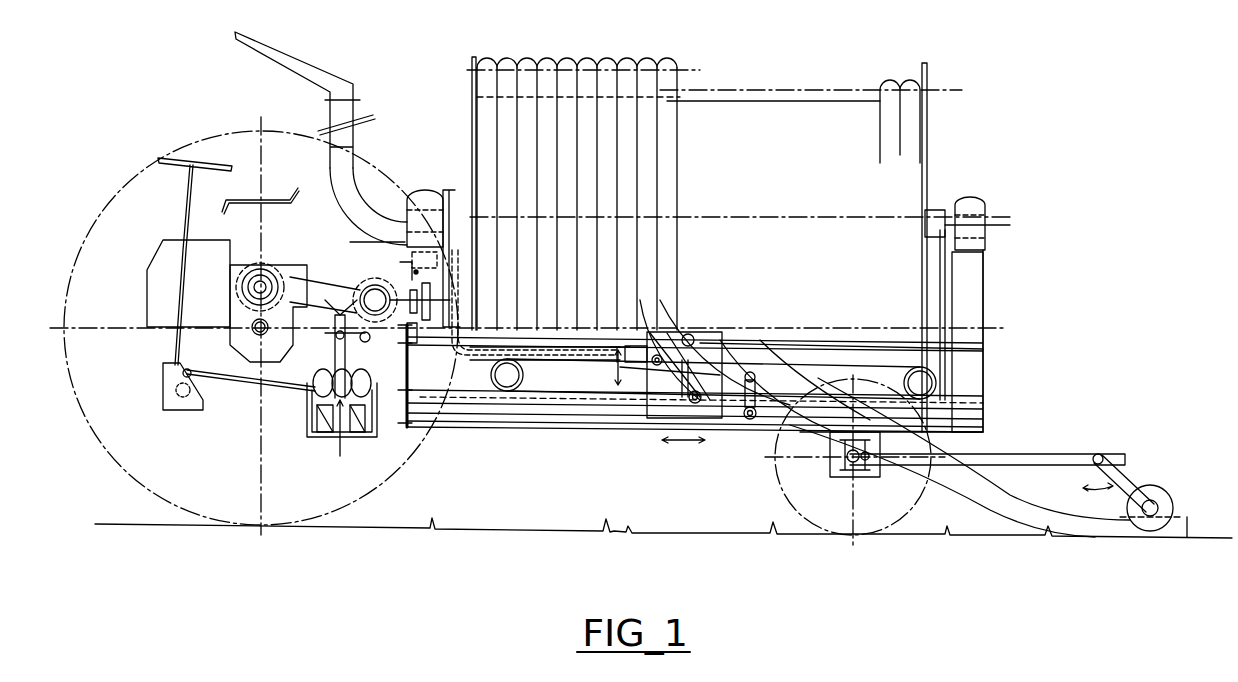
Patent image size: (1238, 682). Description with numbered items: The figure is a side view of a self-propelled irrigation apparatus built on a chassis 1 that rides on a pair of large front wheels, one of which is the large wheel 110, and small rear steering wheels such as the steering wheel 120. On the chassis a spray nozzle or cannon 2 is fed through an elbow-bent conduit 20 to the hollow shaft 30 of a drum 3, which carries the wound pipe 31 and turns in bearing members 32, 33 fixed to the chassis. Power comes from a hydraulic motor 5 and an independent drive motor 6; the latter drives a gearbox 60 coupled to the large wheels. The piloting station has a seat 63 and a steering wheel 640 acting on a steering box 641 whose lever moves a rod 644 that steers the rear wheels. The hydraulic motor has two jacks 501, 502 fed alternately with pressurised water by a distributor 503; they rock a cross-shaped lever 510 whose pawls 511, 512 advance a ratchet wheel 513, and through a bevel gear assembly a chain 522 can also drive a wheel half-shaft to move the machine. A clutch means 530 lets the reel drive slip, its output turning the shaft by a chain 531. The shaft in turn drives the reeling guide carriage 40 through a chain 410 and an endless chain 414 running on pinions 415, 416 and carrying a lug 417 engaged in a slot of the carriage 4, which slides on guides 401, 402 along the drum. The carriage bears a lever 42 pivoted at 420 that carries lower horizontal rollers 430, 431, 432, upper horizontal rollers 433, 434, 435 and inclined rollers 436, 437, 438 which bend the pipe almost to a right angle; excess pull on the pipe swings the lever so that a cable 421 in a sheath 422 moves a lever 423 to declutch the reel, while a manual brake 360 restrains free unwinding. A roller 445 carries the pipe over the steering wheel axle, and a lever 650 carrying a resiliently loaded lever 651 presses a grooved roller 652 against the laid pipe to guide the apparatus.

The chassis 1 is at (975, 400).
The nozzle or cannon 2 is at (300, 62).
The drum 3 is at (790, 90).
The carriage 4 is at (611, 449).
The hydraulic motor 5 is at (367, 490).
The independent drive motor 6 is at (150, 262).
The elbow-bent conduit 20 is at (347, 163).
The hollow shaft 30 is at (468, 195).
The pipe 31 is at (598, 58).
The bearing member 32 is at (418, 193).
The bearing member 33 is at (970, 198).
The carriage 40 is at (613, 430).
The lever 42 is at (658, 400).
The gearbox 60 is at (275, 262).
The seat 63 is at (273, 193).
The large wheel 110 is at (133, 478).
The small steering wheel 120 is at (782, 493).
The manually actuated brake 360 is at (475, 296).
The guide 401 is at (972, 345).
The guide 402 is at (985, 421).
The chain 410 is at (966, 268).
The endless chain 414 is at (545, 400).
The pinion 415 is at (497, 400).
The pinion 416 is at (937, 377).
The lug 417 is at (700, 365).
The pivot / rod 420 is at (623, 383).
The cable 421 is at (610, 340).
The sheath 422 is at (530, 353).
The lever 423 is at (405, 264).
The lower horizontal roller 430 is at (635, 340).
The lower horizontal roller 431 is at (690, 430).
The lower horizontal roller 432 is at (737, 430).
The upper horizontal roller 433 is at (688, 335).
The upper horizontal roller 434 is at (697, 355).
The upper horizontal roller 435 is at (762, 392).
The inclined complementary roller 436 is at (670, 340).
The inclined complementary roller 437 is at (752, 372).
The inclined complementary roller 438 is at (820, 388).
The roller 445 is at (865, 462).
The jack 501 is at (318, 430).
The jack 502 is at (372, 425).
The distributor 503 is at (340, 445).
The cross-shaped lever 510 is at (333, 365).
The pawl 511 is at (335, 322).
The pawl 512 is at (347, 338).
The ratchet wheel 513 is at (372, 290).
The chain 522 is at (308, 268).
The clutch means 530 is at (426, 352).
The chain 531 is at (446, 200).
The steering wheel 640 is at (180, 153).
The steering box 641 is at (163, 395).
The rod 644 is at (225, 385).
The lever 650 is at (1080, 447).
The lever 651 is at (1138, 477).
The grooved roller 652 is at (1172, 492).